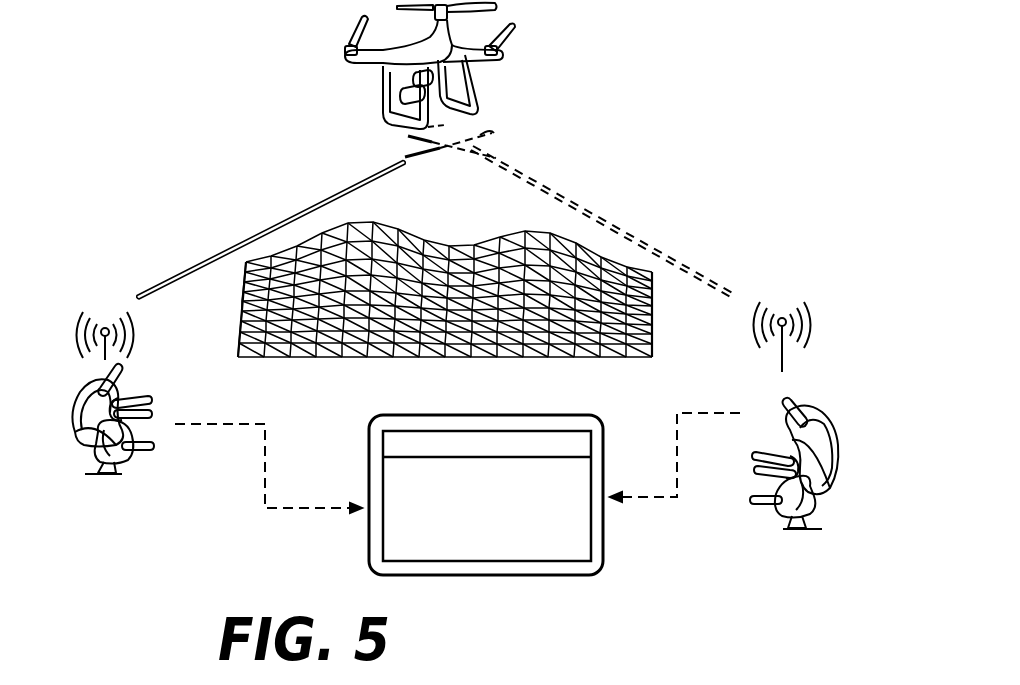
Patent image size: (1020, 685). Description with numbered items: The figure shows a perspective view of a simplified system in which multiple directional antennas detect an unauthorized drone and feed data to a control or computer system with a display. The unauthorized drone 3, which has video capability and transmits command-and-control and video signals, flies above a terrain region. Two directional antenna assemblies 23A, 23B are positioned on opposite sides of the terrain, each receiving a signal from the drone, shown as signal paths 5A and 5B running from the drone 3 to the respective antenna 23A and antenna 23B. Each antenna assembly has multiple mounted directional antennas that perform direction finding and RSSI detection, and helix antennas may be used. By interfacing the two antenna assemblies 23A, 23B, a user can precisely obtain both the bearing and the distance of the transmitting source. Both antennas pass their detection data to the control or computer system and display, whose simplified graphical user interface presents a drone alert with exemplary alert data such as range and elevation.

The unauthorized drone 3 is at (298, 78).
The signal 5A is at (258, 194).
The signal 5B is at (628, 194).
The directional antenna 23A is at (127, 529).
The directional antenna 23B is at (881, 401).